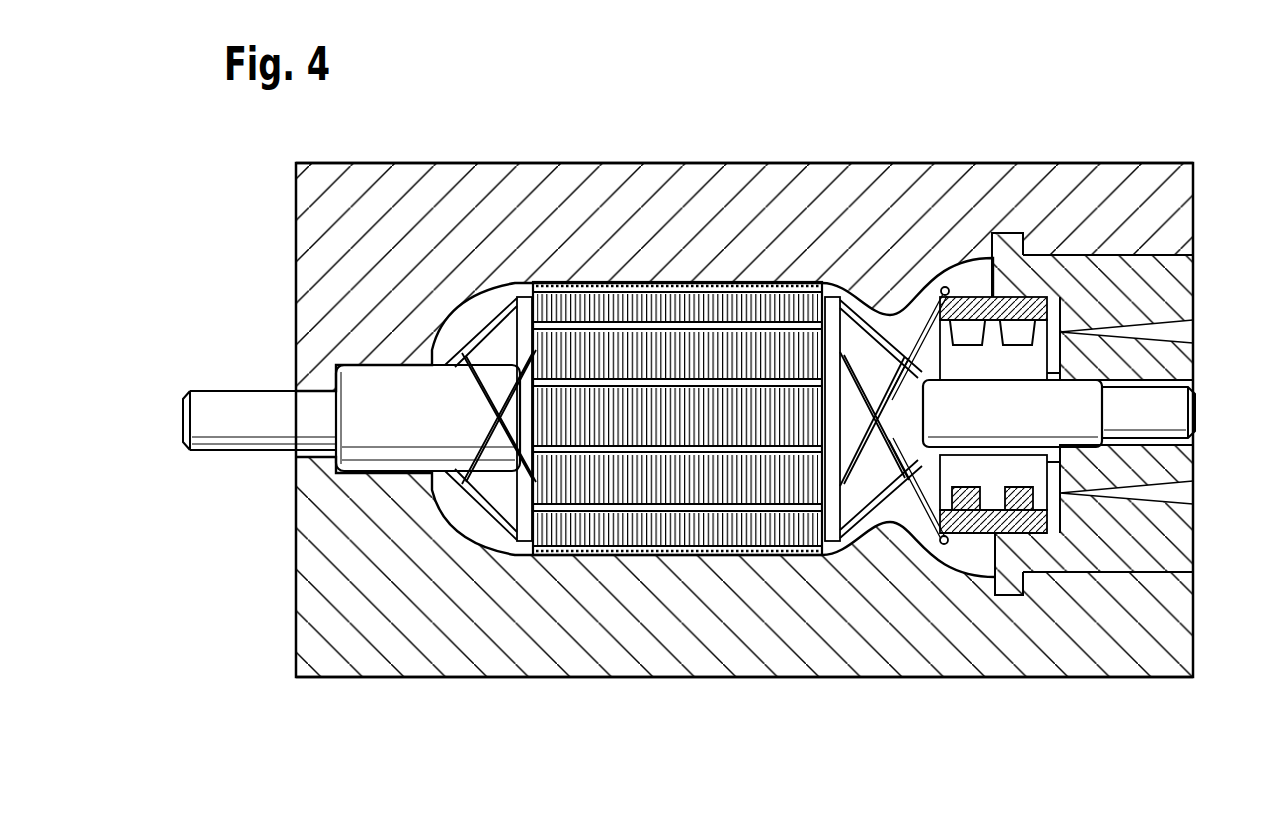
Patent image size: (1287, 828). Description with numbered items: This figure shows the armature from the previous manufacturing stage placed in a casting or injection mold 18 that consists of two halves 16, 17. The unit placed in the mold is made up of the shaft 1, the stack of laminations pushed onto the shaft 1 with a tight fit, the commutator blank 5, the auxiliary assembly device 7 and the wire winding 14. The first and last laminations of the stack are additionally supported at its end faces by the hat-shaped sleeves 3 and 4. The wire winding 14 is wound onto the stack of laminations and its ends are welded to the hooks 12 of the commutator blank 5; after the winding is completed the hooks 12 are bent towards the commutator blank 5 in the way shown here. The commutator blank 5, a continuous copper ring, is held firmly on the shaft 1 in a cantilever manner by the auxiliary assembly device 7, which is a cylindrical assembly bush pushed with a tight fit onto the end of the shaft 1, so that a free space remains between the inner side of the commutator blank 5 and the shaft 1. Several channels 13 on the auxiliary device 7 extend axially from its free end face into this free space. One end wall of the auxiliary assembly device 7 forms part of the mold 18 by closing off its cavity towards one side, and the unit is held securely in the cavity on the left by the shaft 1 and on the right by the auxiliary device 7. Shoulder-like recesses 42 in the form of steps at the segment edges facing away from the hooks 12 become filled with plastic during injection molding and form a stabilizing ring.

The shaft 1 is at (247, 405).
The hat-shaped sleeve 3 is at (442, 431).
The hat-shaped sleeve 4 is at (919, 437).
The commutator blank 5 is at (978, 288).
The auxiliary assembly device 7 is at (1112, 258).
The hooks 12 is at (946, 286).
The channels 13 is at (1162, 338).
The wire winding 14 is at (488, 326).
The mold half 16 is at (731, 655).
The mold half 17 is at (713, 186).
The mold 18 is at (290, 278).
The shoulder-like recesses 42 is at (1045, 297).